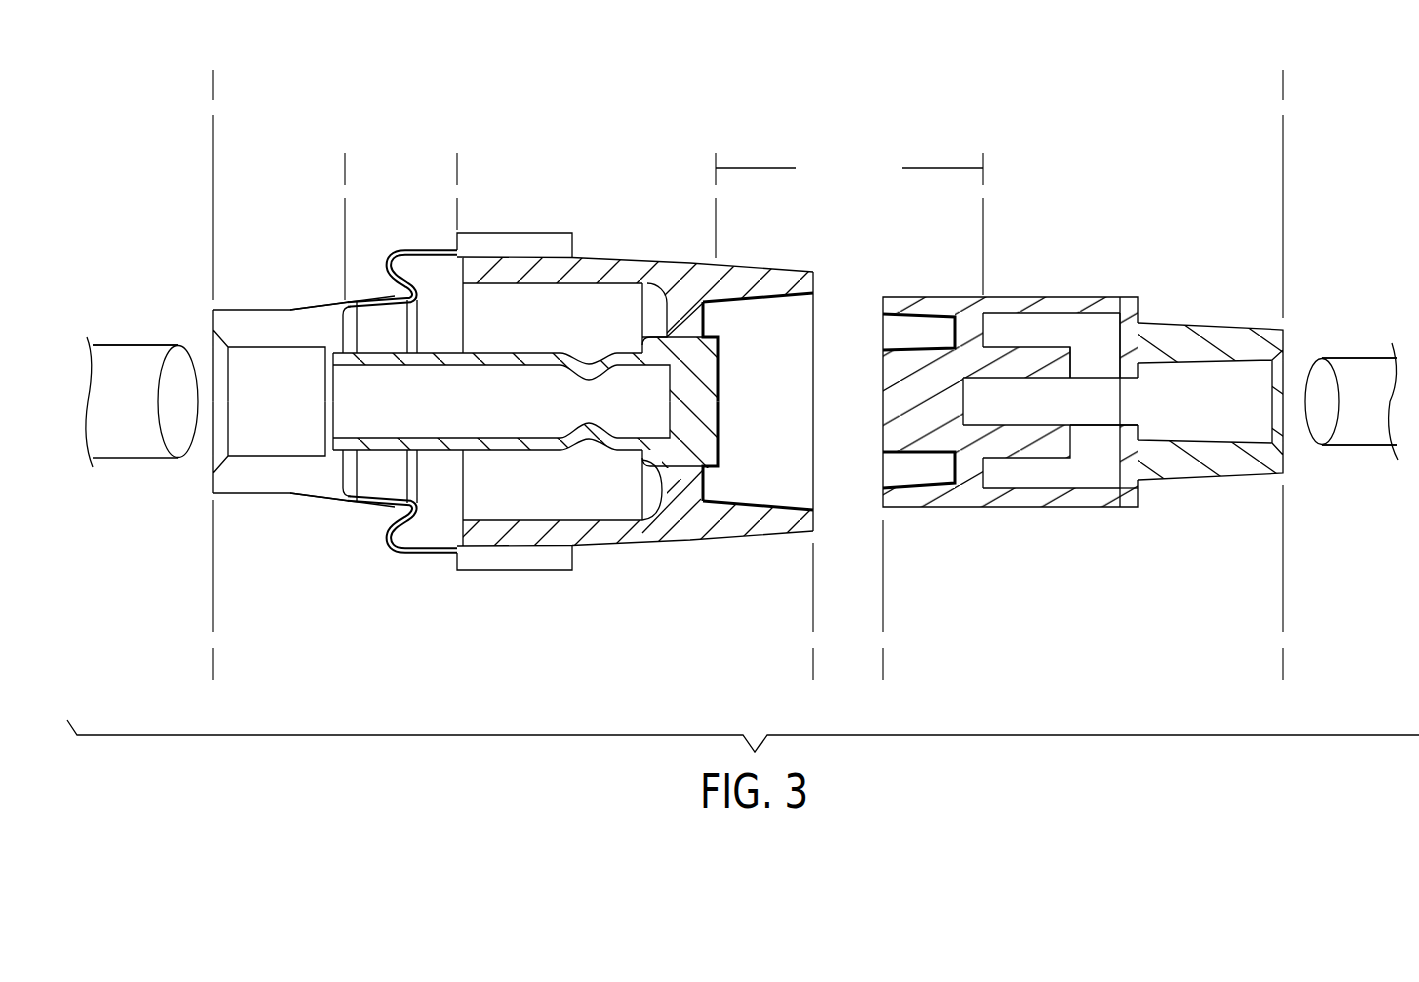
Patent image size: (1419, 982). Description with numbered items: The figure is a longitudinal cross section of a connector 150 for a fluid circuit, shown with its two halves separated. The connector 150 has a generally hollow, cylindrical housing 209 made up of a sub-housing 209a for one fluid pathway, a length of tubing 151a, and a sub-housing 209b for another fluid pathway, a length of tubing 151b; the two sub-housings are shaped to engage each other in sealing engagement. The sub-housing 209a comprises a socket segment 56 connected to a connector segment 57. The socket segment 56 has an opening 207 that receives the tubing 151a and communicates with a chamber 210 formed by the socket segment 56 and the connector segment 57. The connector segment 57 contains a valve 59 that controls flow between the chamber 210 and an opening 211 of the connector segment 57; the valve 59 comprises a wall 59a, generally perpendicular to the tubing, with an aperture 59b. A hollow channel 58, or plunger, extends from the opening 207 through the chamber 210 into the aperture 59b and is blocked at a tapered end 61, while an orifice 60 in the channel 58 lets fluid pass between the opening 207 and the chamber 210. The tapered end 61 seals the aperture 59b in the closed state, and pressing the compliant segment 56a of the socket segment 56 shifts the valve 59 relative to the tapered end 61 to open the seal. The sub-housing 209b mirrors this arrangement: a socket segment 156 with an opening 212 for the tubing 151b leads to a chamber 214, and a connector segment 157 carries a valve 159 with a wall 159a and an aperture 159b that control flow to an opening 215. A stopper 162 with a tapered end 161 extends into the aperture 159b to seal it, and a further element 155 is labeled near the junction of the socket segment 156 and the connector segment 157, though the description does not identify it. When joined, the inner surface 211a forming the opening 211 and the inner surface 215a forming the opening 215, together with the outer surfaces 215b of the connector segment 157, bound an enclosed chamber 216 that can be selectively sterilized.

The connector 150 is at (160, 571).
The tubing 151a is at (120, 433).
The tubing 151b is at (1353, 423).
The hub of female connector 155 is at (1140, 498).
The socket segment 156 is at (1216, 318).
The connector segment 157 is at (1057, 294).
The valve 159 is at (968, 460).
The wall 159a is at (965, 330).
The aperture 159b is at (975, 484).
The tapered end 161 is at (913, 430).
The stopper 162 is at (1088, 432).
The opening 207 is at (197, 338).
The housing 209 is at (213, 85).
The sub-housing 209a is at (213, 665).
The sub-housing 209b is at (883, 665).
The chamber 210 is at (522, 310).
The opening 211 is at (777, 347).
The inner surface 211a is at (800, 265).
The opening 212 is at (1301, 353).
The chamber 214 is at (1092, 340).
The opening 215 is at (905, 330).
The inner surface 215a is at (895, 471).
The outer surfaces 215b is at (918, 506).
The enclosed chamber 216 is at (983, 168).
The socket segment 56 is at (317, 287).
The compliant segment 56a is at (345, 168).
The connector segment 57 is at (606, 256).
The hollow channel 58 is at (549, 456).
The valve 59 is at (690, 307).
The wall 59a is at (688, 483).
The aperture 59b is at (663, 477).
The orifice 60 is at (592, 372).
The tapered end 61 is at (693, 427).